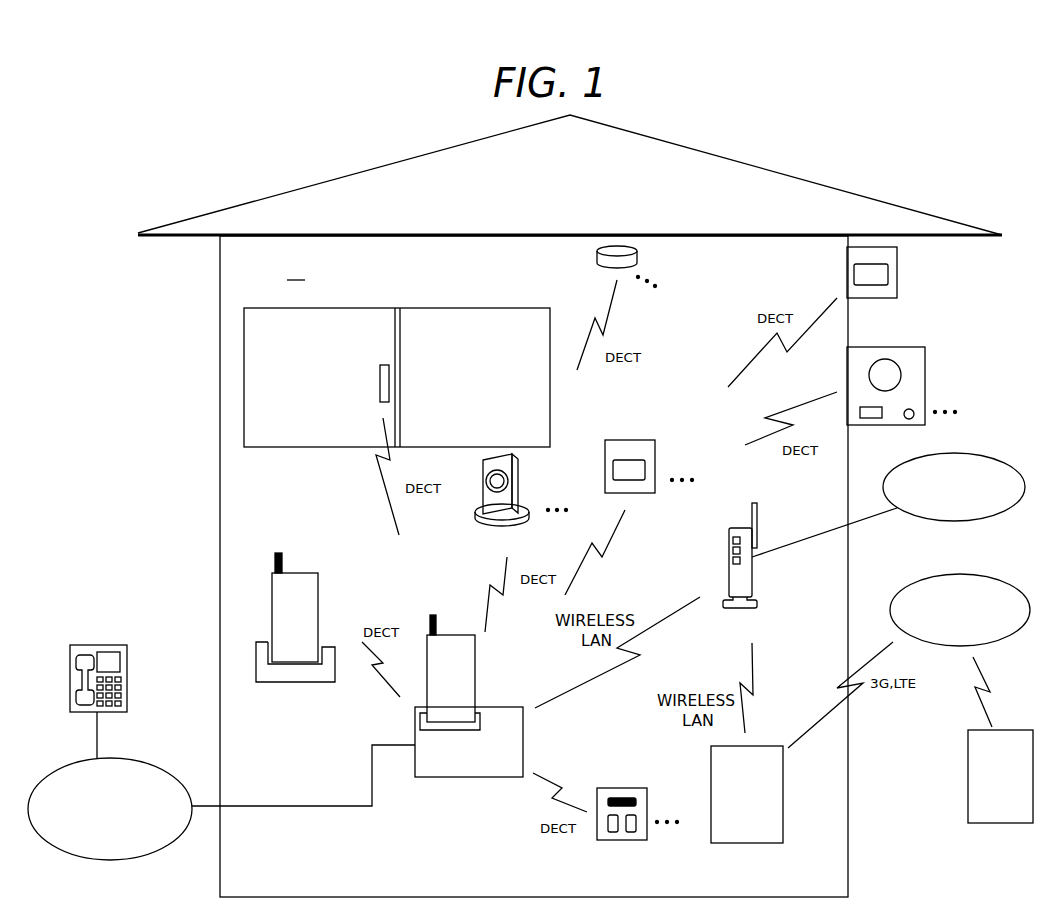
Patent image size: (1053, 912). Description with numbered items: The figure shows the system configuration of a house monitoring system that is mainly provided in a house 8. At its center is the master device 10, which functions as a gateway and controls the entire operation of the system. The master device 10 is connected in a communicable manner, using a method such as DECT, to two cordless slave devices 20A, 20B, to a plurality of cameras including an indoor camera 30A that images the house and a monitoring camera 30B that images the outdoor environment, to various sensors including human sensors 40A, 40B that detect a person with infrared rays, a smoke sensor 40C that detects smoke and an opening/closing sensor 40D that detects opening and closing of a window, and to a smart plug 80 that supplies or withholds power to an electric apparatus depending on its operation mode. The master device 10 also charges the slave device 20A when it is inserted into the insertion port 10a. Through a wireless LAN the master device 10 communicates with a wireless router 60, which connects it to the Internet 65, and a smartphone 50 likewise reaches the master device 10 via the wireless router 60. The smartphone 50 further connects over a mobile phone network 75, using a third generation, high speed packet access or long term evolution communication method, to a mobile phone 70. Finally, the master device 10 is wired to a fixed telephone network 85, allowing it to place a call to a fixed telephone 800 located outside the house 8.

The house 8 is at (848, 826).
The master device 10 is at (480, 778).
The insertion port 10a is at (415, 726).
The cordless slave device 20A is at (478, 656).
The cordless slave device 20B is at (305, 573).
The indoor camera 30A is at (523, 492).
The monitoring camera 30B is at (927, 392).
The human sensor 40A is at (657, 466).
The human sensor 40B is at (898, 282).
The smoke sensor 40C is at (640, 260).
The opening/closing sensor 40D is at (378, 375).
The smartphone 50 is at (785, 803).
The wireless router 60 is at (755, 582).
The Internet 65 is at (1000, 463).
The mobile phone 70 is at (967, 773).
The mobile phone network 75 is at (996, 565).
The smart plug 80 is at (618, 788).
The fixed telephone network 85 is at (160, 766).
The fixed telephone 800 is at (130, 652).